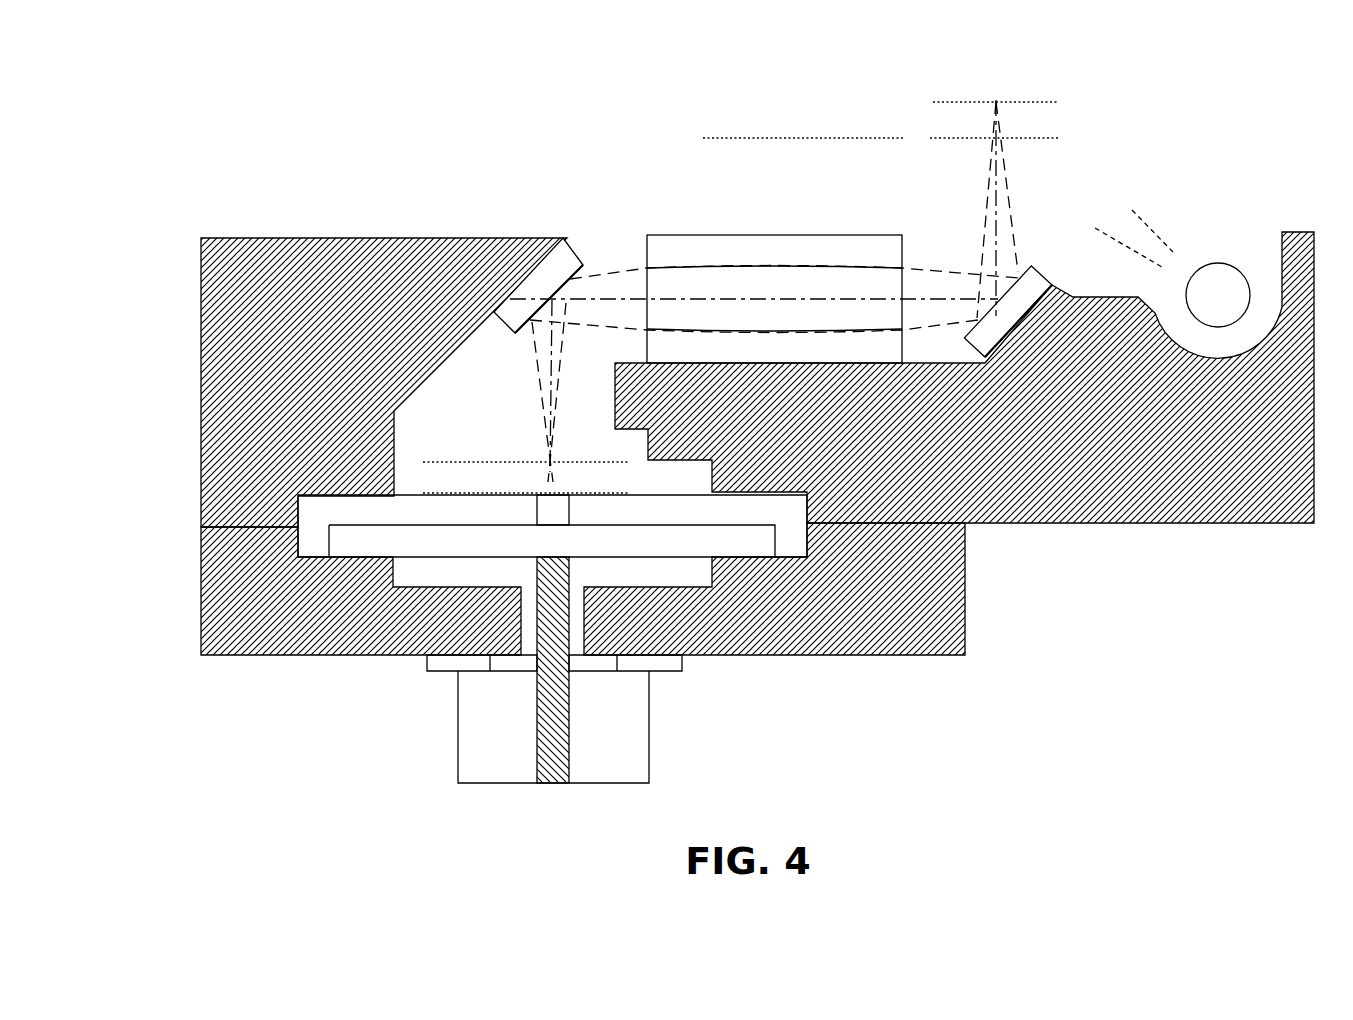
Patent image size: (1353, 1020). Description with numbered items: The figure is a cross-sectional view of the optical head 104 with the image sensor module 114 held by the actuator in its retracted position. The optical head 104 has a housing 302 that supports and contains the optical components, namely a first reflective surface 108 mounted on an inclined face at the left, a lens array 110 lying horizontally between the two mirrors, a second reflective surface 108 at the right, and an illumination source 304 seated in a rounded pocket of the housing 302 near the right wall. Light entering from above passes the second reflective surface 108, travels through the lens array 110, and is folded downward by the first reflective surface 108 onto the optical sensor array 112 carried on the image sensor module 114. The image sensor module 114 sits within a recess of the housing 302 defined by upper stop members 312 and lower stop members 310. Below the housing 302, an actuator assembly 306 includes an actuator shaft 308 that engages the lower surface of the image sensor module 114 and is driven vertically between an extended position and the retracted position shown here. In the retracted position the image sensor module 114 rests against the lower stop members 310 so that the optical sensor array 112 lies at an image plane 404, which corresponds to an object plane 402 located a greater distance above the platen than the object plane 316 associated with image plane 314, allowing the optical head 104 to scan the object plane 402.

The optical head 104 is at (157, 146).
The reflective surface 108 is at (568, 236).
The lens array 110 is at (762, 235).
The optical sensor array 112 is at (595, 510).
The image sensor module 114 is at (774, 586).
The housing 302 is at (1110, 525).
The illumination source 304 is at (1219, 263).
The actuator assembly 306 is at (699, 770).
The actuator shaft 308 is at (570, 723).
The lower stop members 310 is at (418, 572).
The upper stop members 312 is at (406, 463).
The image plane 314 is at (580, 462).
The object plane 316 is at (952, 139).
The object plane 402 is at (1037, 101).
The image plane 404 is at (490, 493).